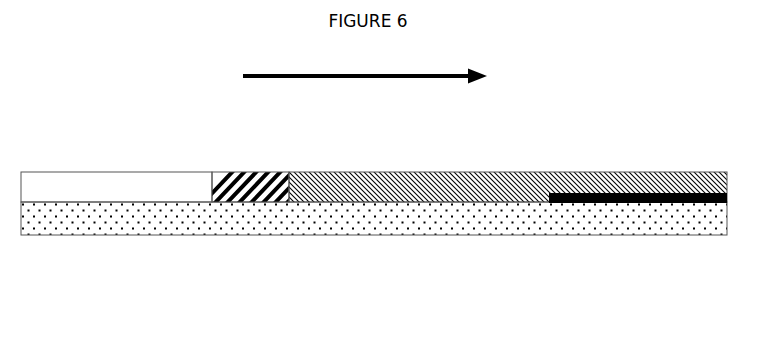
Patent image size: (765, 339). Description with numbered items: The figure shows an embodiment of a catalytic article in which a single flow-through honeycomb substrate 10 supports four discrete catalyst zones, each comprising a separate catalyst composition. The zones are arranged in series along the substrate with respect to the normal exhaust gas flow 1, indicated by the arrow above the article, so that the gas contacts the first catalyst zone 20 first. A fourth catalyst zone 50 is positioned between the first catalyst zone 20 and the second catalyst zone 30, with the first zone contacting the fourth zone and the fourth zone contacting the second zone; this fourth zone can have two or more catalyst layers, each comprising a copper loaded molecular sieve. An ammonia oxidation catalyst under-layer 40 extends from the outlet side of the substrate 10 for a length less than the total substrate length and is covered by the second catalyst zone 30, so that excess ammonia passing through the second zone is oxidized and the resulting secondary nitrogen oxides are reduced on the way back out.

The exhaust gas flow 1 is at (283, 73).
The flow-through honeycomb substrate 10 is at (302, 215).
The first catalyst zone 20 is at (155, 180).
The second catalyst zone 30 is at (428, 187).
The ammonia oxidation catalyst under-layer 40 is at (693, 193).
The fourth catalyst zone 50 is at (260, 178).